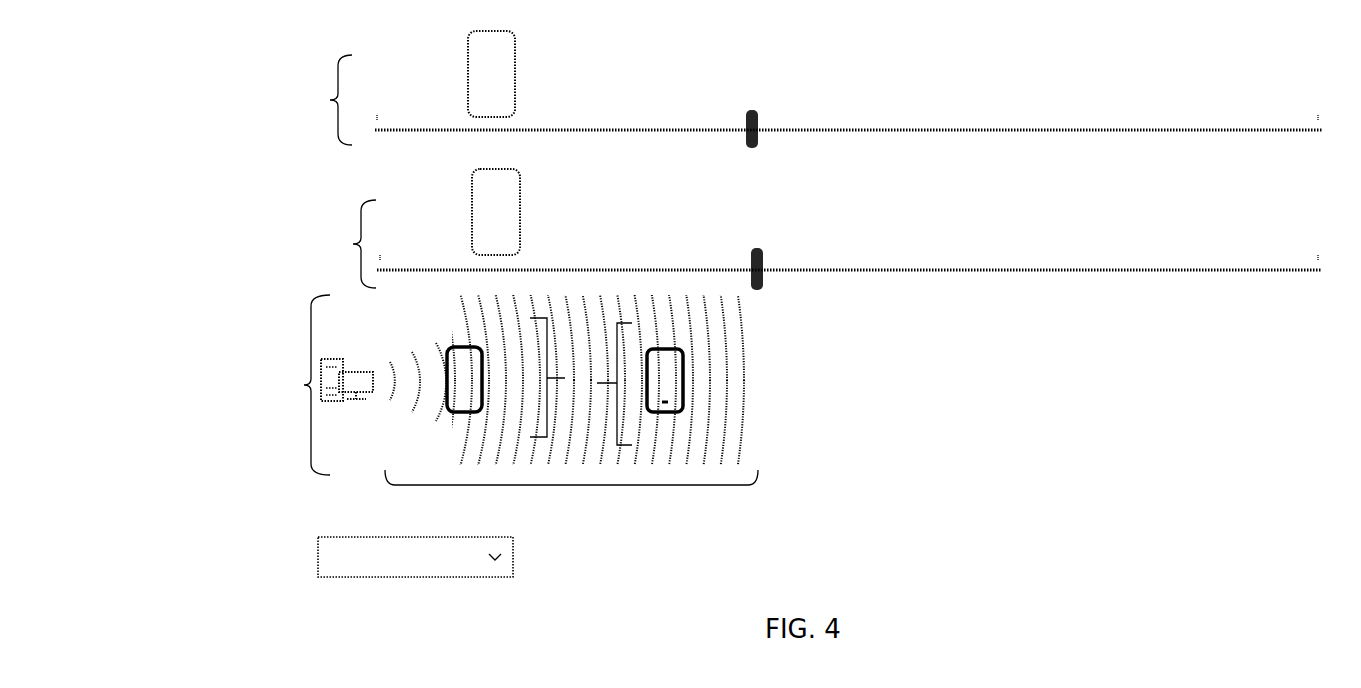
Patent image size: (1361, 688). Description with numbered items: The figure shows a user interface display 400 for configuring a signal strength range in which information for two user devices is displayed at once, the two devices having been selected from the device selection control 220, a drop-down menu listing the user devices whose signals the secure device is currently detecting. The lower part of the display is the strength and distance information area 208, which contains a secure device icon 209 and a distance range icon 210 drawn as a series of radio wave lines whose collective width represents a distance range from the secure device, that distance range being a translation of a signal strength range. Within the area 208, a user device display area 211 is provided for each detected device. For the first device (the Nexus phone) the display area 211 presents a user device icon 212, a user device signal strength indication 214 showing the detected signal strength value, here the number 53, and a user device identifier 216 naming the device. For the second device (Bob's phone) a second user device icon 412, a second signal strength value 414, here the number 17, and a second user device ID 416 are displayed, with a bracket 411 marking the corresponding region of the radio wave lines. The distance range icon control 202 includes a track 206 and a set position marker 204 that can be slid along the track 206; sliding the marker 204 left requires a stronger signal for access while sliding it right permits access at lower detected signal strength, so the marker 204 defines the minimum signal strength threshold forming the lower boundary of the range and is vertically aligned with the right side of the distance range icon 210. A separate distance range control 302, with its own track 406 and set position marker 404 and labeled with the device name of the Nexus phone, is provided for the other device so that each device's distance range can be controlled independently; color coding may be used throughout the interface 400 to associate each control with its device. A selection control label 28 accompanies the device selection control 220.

The user interface display 400 is at (170, 68).
The distance range control 302 is at (330, 100).
The slider knob 404 is at (752, 110).
The slider track 406 is at (1068, 128).
The distance range icon control 202 is at (353, 244).
The set position marker 204 is at (757, 248).
The track 206 is at (1081, 268).
The strength and distance information area 208 is at (304, 385).
The secure device icon 209 is at (322, 360).
The second signal strength value 414 is at (445, 327).
The first signal strength value 17 is at (440, 328).
The second user device icon 412 is at (447, 402).
The first distance range bracket 411 is at (565, 378).
The user device display area 211 is at (597, 383).
The second signal strength value 53 is at (636, 333).
The user device signal strength indication 214 is at (670, 324).
The user device icon 212 is at (687, 378).
The user device identifier 216 is at (752, 426).
The second user device ID 416 is at (453, 450).
The distance range icon 210 is at (570, 485).
The companion selection control 28 is at (340, 537).
The device selection control 220 is at (514, 570).